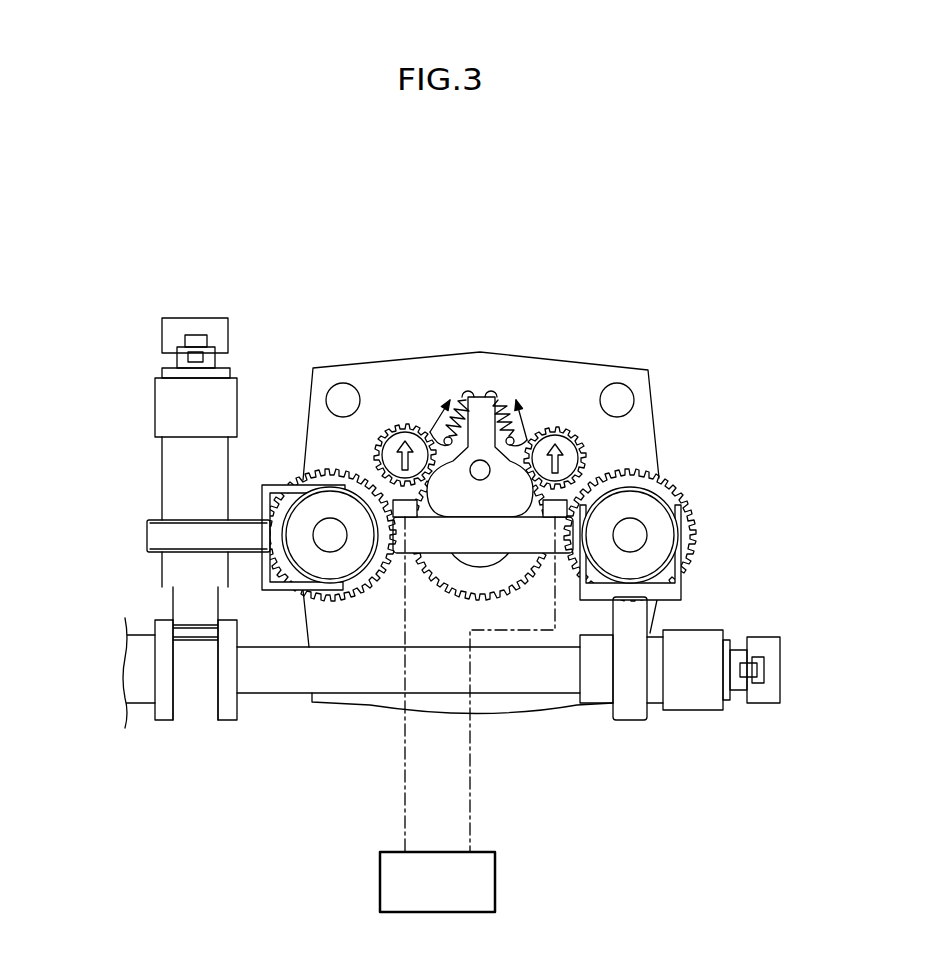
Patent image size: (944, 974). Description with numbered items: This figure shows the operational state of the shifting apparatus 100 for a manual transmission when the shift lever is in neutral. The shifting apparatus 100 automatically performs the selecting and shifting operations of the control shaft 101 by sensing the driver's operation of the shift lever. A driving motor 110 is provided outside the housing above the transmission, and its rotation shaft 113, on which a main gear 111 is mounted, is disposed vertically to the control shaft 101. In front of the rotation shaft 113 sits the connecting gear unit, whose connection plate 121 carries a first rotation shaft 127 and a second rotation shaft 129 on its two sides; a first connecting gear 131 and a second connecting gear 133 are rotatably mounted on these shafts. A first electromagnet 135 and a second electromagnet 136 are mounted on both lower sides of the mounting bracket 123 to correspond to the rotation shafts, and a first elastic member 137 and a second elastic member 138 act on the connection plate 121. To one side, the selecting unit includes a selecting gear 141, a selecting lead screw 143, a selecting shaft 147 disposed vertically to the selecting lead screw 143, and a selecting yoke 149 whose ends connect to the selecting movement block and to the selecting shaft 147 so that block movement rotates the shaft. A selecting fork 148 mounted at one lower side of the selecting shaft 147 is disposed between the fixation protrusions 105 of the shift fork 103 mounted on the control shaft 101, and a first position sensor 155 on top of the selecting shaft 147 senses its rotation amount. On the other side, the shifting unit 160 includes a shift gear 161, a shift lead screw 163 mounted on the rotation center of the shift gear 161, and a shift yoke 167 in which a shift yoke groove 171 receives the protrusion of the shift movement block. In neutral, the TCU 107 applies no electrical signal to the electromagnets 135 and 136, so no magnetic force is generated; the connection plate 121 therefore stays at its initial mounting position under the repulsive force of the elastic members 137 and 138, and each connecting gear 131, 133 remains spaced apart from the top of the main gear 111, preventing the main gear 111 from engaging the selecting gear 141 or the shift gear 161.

The shifting apparatus 100 is at (436, 202).
The control shaft 101 is at (340, 692).
The shift fork 103 is at (142, 697).
The fixation protrusions 105 is at (225, 712).
The transmission control unit (TCU) 107 is at (498, 882).
The driving motor 110 is at (530, 368).
The main gear 111 is at (480, 590).
The rotation shaft 113 is at (502, 557).
The connection plate 121 is at (563, 430).
The mounting bracket 123 is at (663, 500).
The first rotation shaft 127 is at (362, 477).
The second rotation shaft 129 is at (590, 425).
The first connecting gear 131 is at (397, 447).
The second connecting gear 133 is at (583, 437).
The first electromagnet 135 is at (327, 478).
The second electromagnet 136 is at (600, 503).
The first elastic member 137 is at (460, 393).
The second elastic member 138 is at (507, 393).
The selecting gear 141 is at (310, 520).
The selecting lead screw 143 is at (330, 535).
The selecting shaft 147 is at (173, 472).
The selecting fork 148 is at (188, 632).
The selecting yoke 149 is at (155, 535).
The first position sensor 155 is at (197, 325).
The shifting unit 160 is at (693, 720).
The shift gear 161 is at (693, 507).
The shift lead screw 163 is at (633, 535).
The shift yoke 167 is at (630, 713).
The shift yoke groove 171 is at (763, 645).